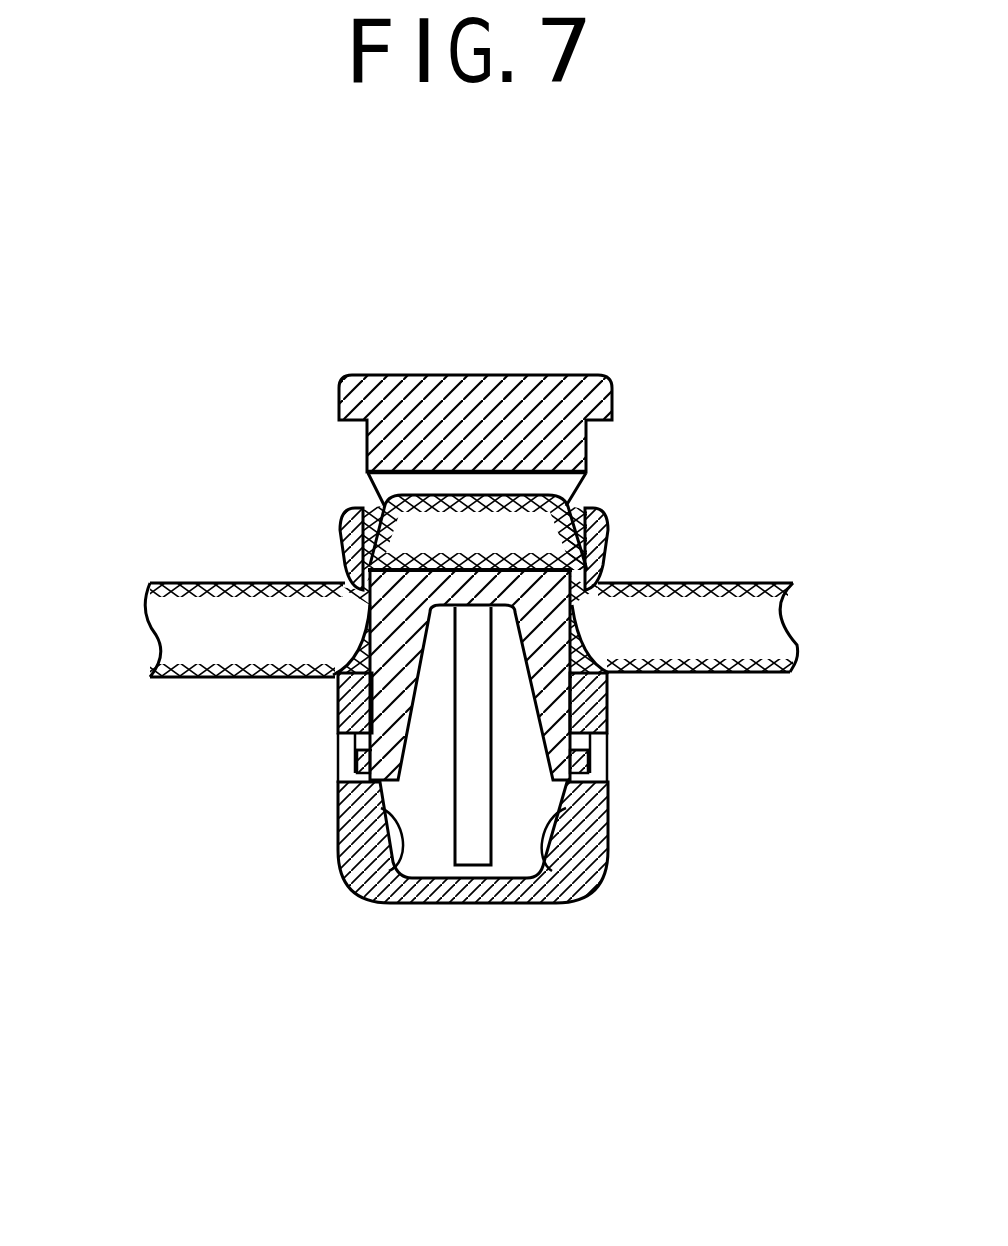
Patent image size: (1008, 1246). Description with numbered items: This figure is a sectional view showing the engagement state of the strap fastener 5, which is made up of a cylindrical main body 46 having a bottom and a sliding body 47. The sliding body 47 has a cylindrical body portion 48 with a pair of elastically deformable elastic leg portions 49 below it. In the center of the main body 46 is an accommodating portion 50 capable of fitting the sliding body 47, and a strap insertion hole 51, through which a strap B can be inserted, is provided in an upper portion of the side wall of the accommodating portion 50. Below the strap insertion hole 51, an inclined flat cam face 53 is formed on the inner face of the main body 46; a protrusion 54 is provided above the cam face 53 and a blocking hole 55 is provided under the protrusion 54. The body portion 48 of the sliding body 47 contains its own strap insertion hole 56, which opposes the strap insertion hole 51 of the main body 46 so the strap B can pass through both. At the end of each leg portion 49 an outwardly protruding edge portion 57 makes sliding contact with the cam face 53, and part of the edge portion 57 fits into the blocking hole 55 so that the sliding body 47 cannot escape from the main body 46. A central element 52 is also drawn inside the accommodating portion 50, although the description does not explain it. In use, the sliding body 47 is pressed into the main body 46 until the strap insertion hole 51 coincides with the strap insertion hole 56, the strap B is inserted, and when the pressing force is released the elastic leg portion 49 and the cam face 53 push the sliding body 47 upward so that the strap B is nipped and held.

The strap fastener 5 is at (475, 350).
The main body 46 is at (471, 795).
The sliding body 47 is at (496, 368).
The body portion 48 is at (368, 462).
The elastic leg portion 49 is at (392, 623).
The accommodating portion 50 is at (430, 773).
The strap insertion hole 51 is at (608, 702).
The rib 52 is at (475, 833).
The cam face 53 is at (360, 885).
The protrusion 54 is at (338, 703).
The blocking hole 55 is at (338, 775).
The strap insertion hole 56 is at (555, 483).
The edge portion 57 is at (347, 757).
The strap B is at (185, 633).